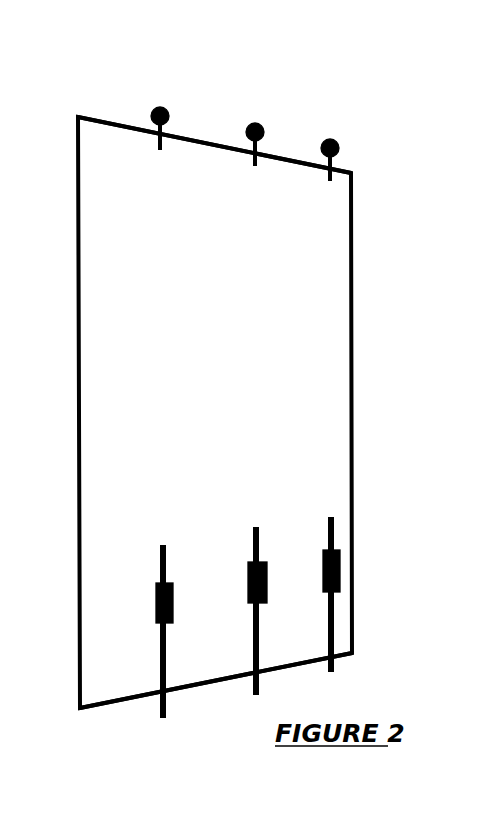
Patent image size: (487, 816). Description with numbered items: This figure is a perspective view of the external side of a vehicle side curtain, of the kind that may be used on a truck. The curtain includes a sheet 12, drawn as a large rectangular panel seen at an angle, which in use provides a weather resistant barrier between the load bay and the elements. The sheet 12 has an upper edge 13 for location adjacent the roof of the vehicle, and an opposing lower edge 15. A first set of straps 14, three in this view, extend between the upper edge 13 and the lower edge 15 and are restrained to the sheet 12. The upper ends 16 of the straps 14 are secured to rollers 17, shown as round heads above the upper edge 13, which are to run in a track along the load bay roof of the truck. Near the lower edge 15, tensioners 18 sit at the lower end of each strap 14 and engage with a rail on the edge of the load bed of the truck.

The sheet 12 is at (333, 268).
The upper edge 13 is at (110, 120).
The straps 14 is at (168, 680).
The lower edge 15 is at (100, 706).
The upper ends 16 is at (150, 128).
The rollers 17 is at (170, 108).
The tensioners 18 is at (156, 620).